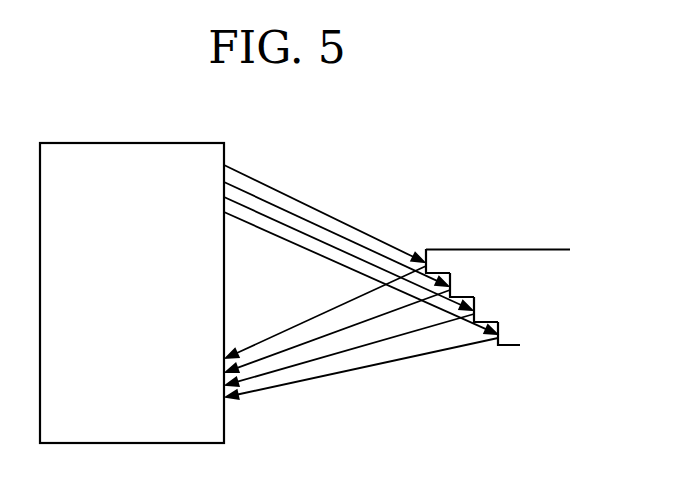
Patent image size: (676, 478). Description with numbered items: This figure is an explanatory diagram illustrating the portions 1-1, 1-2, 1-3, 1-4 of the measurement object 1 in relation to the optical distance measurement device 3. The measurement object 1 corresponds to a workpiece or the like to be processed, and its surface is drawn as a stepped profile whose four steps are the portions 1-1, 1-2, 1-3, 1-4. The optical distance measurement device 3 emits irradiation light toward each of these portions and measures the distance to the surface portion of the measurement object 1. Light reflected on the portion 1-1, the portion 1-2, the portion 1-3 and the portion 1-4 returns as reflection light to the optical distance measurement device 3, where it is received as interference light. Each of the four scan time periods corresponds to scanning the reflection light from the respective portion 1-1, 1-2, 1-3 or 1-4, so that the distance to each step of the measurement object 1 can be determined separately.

The optical distance measurement device 3 is at (190, 142).
The measurement object 1 is at (476, 312).
The portion 1-1 is at (421, 250).
The portion 1-2 is at (447, 297).
The portion 1-3 is at (470, 322).
The portion 1-4 is at (492, 348).